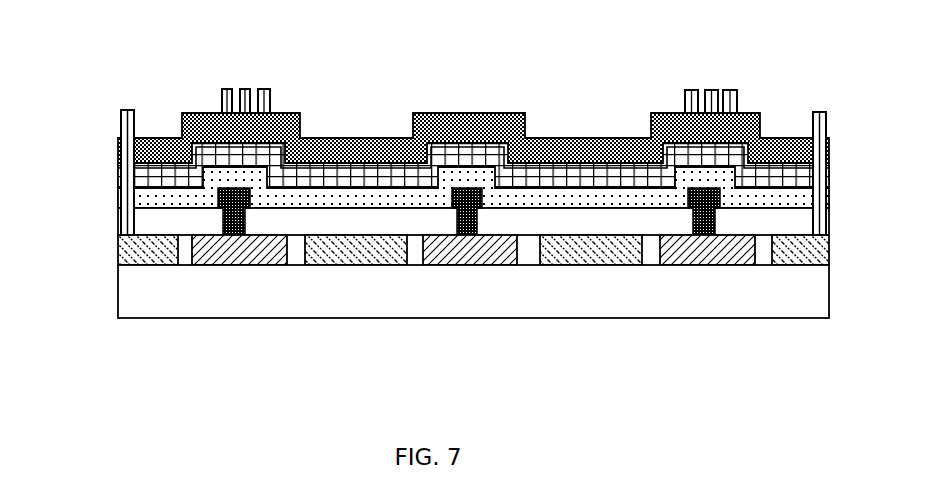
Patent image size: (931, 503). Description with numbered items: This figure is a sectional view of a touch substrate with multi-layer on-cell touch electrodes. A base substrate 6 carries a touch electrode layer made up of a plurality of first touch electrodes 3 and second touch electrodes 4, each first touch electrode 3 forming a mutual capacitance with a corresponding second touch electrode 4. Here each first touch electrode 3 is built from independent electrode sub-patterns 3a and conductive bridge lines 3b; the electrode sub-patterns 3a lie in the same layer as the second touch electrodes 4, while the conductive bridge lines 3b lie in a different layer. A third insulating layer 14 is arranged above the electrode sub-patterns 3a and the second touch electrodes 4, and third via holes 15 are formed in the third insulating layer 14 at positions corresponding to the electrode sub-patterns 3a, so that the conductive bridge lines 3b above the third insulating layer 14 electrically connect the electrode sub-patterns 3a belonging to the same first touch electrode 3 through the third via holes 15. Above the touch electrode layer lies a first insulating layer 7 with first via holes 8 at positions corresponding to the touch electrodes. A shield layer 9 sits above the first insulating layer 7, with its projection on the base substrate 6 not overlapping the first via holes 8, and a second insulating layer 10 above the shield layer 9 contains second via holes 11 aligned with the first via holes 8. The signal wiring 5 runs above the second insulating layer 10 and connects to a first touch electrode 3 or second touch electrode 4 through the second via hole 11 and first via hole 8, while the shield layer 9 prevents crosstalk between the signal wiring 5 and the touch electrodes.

The first touch electrode 3 is at (283, 373).
The electrode sub-pattern 3a is at (218, 252).
The conductive bridge line 3b is at (234, 231).
The second touch electrode 4 is at (155, 252).
The signal wiring 5 is at (126, 112).
The base substrate 6 is at (130, 295).
The first insulating layer 7 is at (119, 207).
The first via hole 8 is at (120, 197).
The shield layer 9 is at (147, 177).
The second insulating layer 10 is at (122, 167).
The second via hole 11 is at (123, 148).
The third insulating layer 14 is at (148, 222).
The third via hole 15 is at (224, 222).